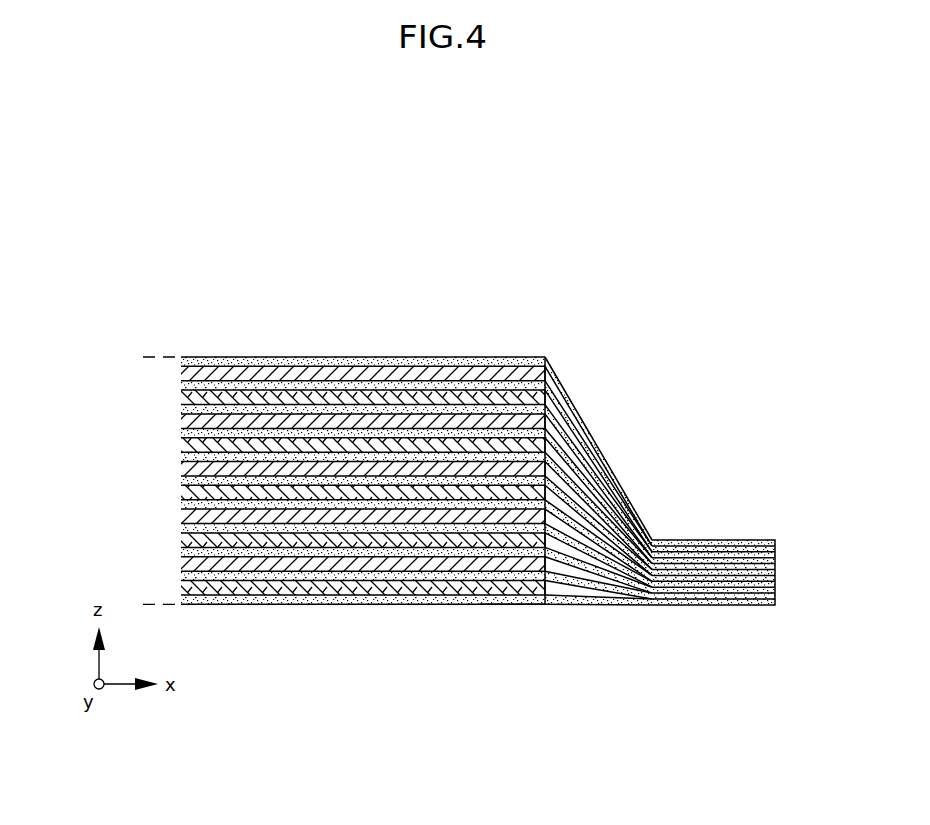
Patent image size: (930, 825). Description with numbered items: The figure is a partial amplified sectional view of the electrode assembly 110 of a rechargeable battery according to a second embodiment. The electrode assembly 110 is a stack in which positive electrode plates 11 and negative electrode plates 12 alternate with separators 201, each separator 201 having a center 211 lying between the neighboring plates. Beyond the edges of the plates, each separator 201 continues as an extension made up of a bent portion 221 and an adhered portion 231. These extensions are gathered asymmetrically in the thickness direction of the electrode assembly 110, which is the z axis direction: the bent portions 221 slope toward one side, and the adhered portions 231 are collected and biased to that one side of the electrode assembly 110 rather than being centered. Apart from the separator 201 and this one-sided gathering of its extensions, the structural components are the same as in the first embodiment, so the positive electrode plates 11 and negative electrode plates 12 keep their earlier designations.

The electrode assembly 110 is at (394, 306).
The positive electrode plate 11 is at (229, 375).
The negative electrode plate 12 is at (281, 588).
The separator 201 is at (700, 658).
The center of the separator 211 is at (512, 606).
The bent portion 221 is at (605, 606).
The adhered portion 231 is at (706, 606).